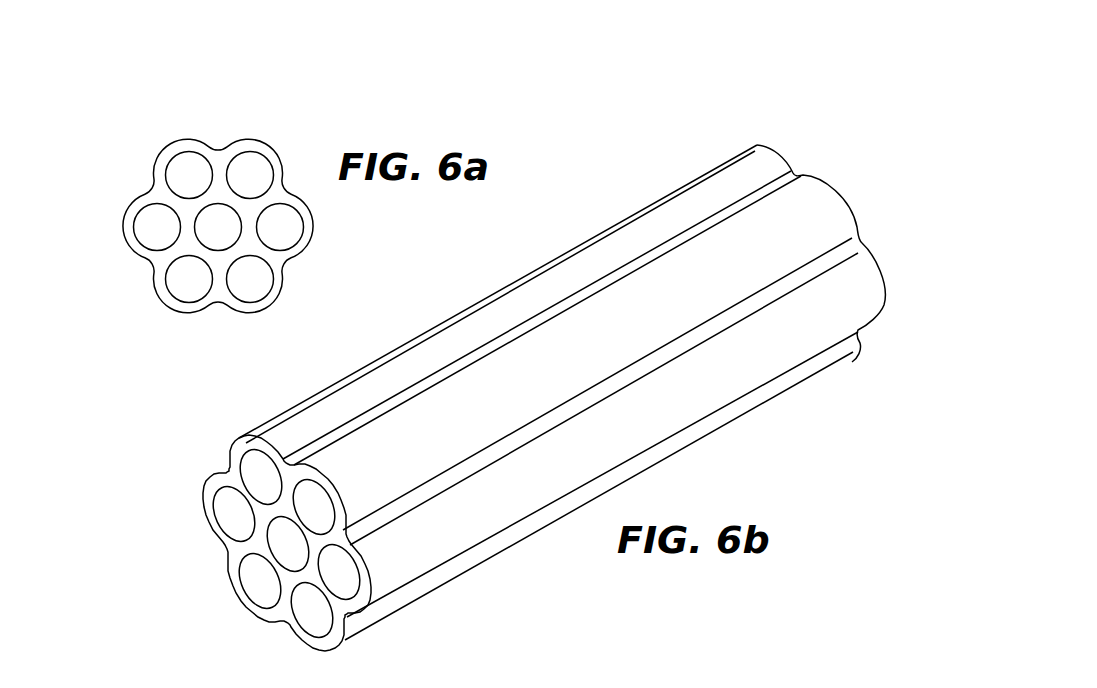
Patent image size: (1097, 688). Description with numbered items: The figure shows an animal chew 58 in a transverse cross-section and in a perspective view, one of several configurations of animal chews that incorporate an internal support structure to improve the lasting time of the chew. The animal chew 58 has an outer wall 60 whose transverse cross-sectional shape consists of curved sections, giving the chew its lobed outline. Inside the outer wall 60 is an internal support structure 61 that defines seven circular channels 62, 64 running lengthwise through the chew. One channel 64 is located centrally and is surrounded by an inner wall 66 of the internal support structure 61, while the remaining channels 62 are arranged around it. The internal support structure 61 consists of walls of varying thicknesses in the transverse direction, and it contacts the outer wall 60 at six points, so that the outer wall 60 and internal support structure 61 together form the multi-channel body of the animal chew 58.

In FIG. 6A, the animal chew 58 is at (214, 233).
In FIG. 6B, the animal chew 58 is at (522, 341).
In FIG. 6A, the outer wall 60 is at (162, 304).
In FIG. 6B, the outer wall 60 is at (628, 233).
In FIG. 6A, the internal support structure 61 is at (265, 252).
In FIG. 6B, the internal support structure 61 is at (245, 550).
In FIG. 6A, the circular channels 62 is at (258, 168).
In FIG. 6A, the circular channel 64 is at (228, 225).
In FIG. 6A, the inner wall 66 is at (186, 227).